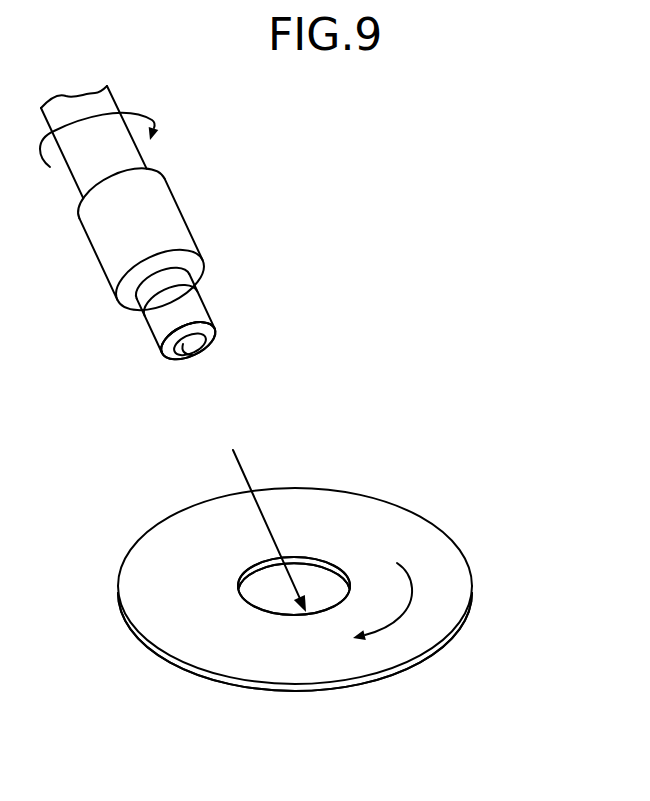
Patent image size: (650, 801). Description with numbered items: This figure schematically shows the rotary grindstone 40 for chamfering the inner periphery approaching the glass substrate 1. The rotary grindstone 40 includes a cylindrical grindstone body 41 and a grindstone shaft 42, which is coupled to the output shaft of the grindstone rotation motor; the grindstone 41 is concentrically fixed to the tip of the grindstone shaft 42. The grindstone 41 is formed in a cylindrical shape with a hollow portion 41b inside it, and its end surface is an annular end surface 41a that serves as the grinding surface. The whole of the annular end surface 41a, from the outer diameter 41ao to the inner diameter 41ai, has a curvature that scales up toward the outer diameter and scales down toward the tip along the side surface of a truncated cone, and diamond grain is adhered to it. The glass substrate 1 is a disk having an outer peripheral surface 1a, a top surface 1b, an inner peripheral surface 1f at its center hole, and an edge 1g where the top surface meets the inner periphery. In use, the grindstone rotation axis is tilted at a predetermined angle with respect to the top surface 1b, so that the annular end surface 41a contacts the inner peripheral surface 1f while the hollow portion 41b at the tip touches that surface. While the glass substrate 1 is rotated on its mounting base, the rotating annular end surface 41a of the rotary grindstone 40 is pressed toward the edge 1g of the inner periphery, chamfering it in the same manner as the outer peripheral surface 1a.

The rotary grindstone 40 is at (178, 253).
The grindstone shaft 42 is at (189, 230).
The grindstone body 41 is at (204, 305).
The annular end surface 41a is at (208, 346).
The outer diameter 41ao is at (167, 336).
The inner diameter 41ai is at (183, 356).
The hollow portion 41b is at (185, 348).
The glass substrate 1 is at (412, 513).
The outer peripheral surface 1a is at (293, 684).
The top surface 1b is at (452, 593).
The inner peripheral surface 1f is at (249, 603).
The edge 1g is at (318, 559).